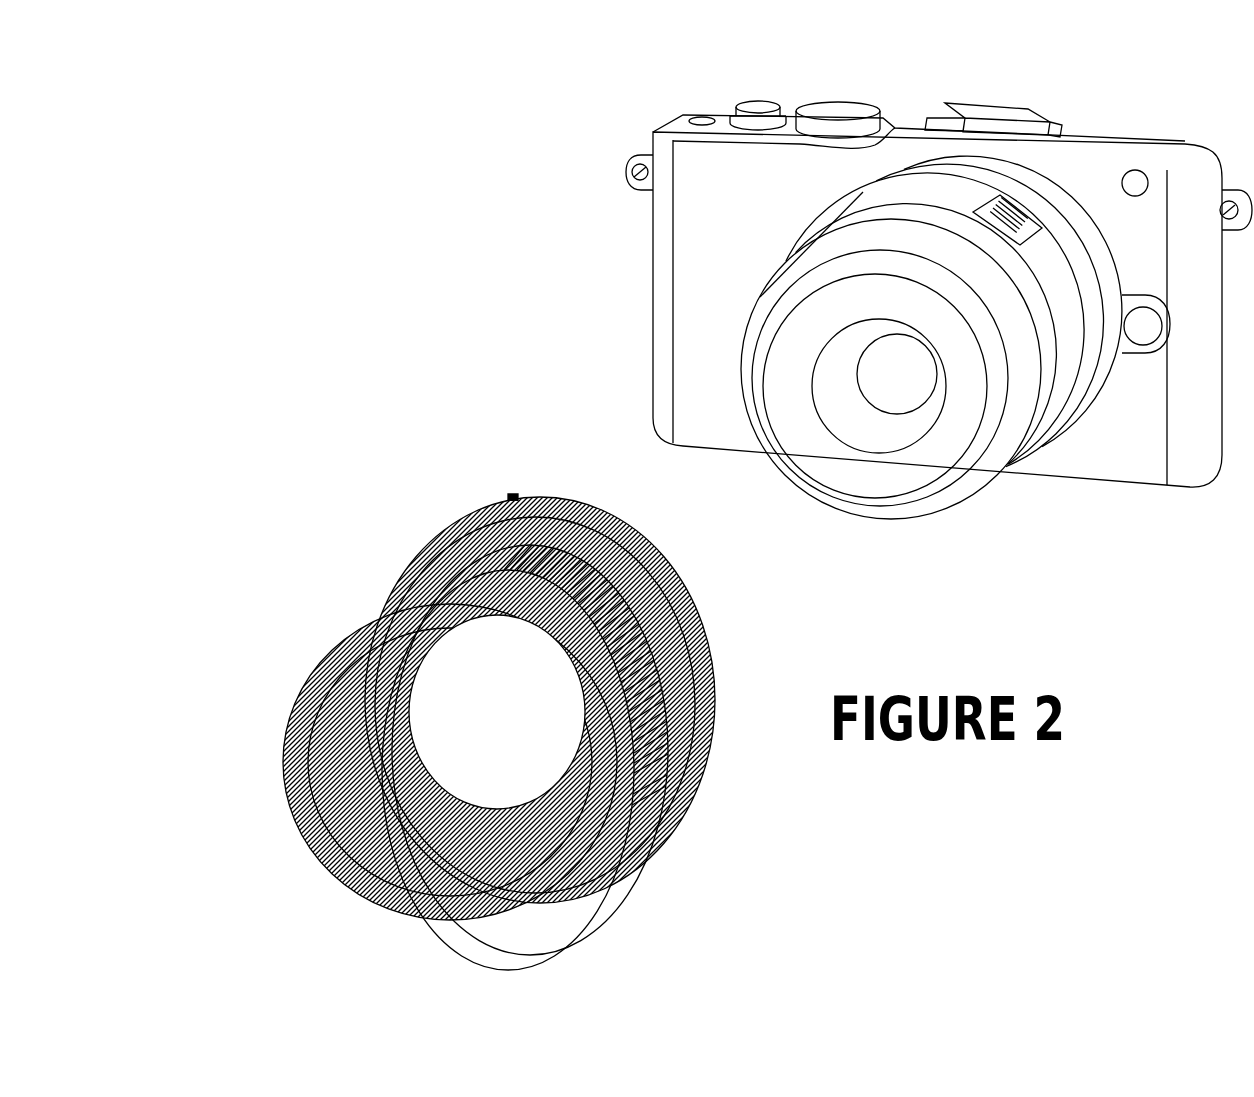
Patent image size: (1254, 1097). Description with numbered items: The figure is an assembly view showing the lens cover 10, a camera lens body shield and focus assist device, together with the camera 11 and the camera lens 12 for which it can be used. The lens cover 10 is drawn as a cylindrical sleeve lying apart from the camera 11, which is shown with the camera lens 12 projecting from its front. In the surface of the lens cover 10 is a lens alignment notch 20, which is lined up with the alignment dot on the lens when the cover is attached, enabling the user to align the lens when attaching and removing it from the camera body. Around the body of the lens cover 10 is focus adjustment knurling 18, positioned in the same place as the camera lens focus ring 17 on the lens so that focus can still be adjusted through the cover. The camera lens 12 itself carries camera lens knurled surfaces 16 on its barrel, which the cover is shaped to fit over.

The lens cover 10 is at (488, 694).
The camera 11 is at (652, 313).
The camera lens 12 is at (995, 329).
The camera lens knurled surfaces 16 is at (1083, 400).
The camera lens focus ring 17 is at (970, 196).
The focus adjustment knurling 18 is at (632, 557).
The lens alignment notch 20 is at (513, 497).